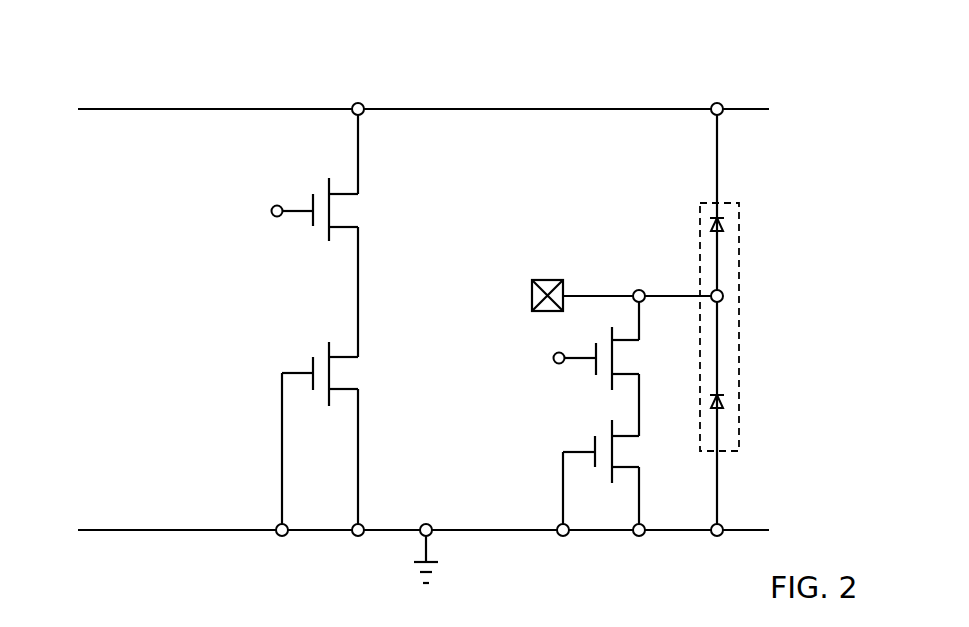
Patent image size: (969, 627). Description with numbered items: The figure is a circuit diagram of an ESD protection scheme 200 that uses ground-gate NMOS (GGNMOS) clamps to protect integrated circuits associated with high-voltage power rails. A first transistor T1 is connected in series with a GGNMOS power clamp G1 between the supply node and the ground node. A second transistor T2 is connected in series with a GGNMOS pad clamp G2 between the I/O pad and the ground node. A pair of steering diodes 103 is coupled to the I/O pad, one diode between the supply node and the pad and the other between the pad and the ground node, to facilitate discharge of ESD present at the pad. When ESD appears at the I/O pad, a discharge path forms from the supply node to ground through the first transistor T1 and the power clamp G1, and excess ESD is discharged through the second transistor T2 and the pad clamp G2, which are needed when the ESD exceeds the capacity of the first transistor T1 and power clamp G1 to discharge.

The ESD protection scheme 200 is at (158, 78).
The pair of steering diodes 103 is at (737, 203).
The first transistor T1 is at (331, 209).
The GGNMOS power clamp G1 is at (337, 374).
The second transistor T2 is at (610, 358).
The GGNMOS pad clamp G2 is at (614, 451).